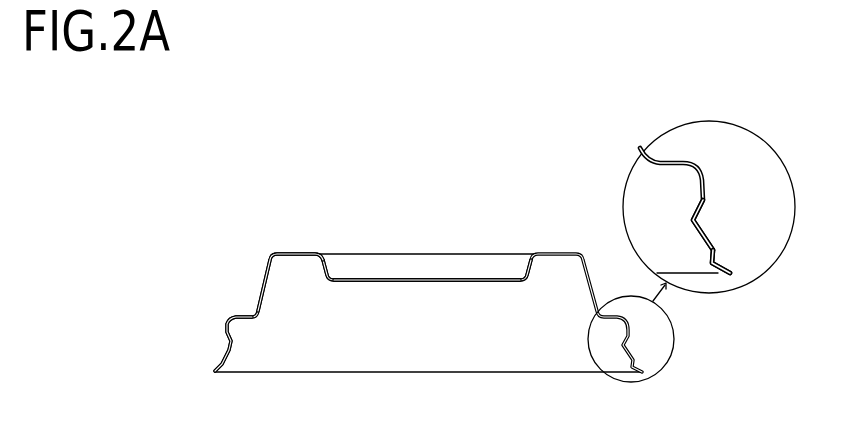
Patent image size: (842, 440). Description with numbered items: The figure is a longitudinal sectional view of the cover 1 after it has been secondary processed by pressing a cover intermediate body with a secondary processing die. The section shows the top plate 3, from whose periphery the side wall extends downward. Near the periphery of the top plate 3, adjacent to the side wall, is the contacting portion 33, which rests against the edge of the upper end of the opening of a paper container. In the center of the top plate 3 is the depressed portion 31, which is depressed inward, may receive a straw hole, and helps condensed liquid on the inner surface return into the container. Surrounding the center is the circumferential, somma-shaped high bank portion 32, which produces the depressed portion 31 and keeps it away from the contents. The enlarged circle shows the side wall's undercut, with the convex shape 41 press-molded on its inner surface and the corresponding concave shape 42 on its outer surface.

The cover 1 is at (348, 260).
The top plate 3 is at (475, 278).
The depressed portion 31 is at (400, 278).
The high bank portion 32 is at (297, 253).
The contacting portion 33 is at (242, 312).
The convex shape 41 is at (693, 223).
The concave shape 42 is at (697, 220).